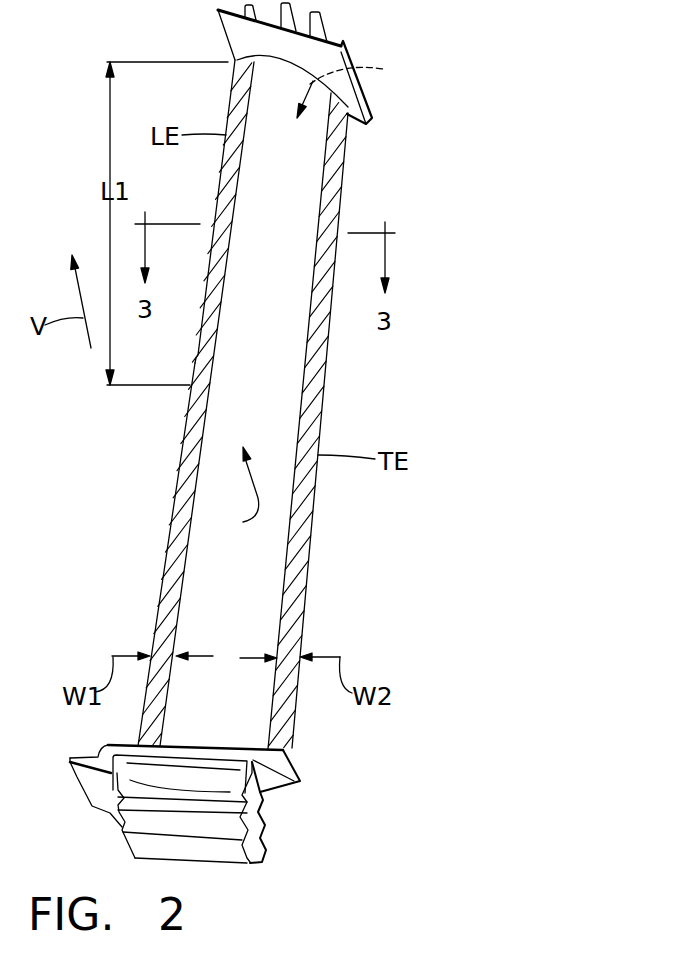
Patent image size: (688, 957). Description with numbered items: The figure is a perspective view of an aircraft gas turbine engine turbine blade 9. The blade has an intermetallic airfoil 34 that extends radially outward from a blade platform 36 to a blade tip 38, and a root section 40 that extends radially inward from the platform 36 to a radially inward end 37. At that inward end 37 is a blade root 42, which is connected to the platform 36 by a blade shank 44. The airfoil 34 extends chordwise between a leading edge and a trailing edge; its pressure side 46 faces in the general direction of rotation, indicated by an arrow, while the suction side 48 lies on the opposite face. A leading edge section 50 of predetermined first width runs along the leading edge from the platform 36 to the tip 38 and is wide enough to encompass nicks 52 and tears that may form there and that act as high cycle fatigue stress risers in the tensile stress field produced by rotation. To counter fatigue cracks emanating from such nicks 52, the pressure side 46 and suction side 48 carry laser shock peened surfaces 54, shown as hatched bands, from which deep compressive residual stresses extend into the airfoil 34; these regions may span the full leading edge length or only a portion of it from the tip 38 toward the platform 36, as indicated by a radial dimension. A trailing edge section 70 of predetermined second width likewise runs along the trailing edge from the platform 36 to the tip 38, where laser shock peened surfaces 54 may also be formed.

The turbine blade 9 is at (392, 158).
The intermetallic airfoil 34 is at (250, 404).
The blade platform 36 is at (227, 744).
The radially inward end 37 is at (197, 852).
The blade tip 38 is at (272, 53).
The root section 40 is at (247, 847).
The blade root 42 is at (122, 826).
The blade shank 44 is at (258, 795).
The pressure side 46 is at (357, 87).
The suction side 48 is at (235, 494).
The leading edge section 50 is at (176, 532).
The nicks 52 is at (197, 358).
The laser shock peened surfaces 54 is at (323, 211).
The trailing edge section 70 is at (314, 393).